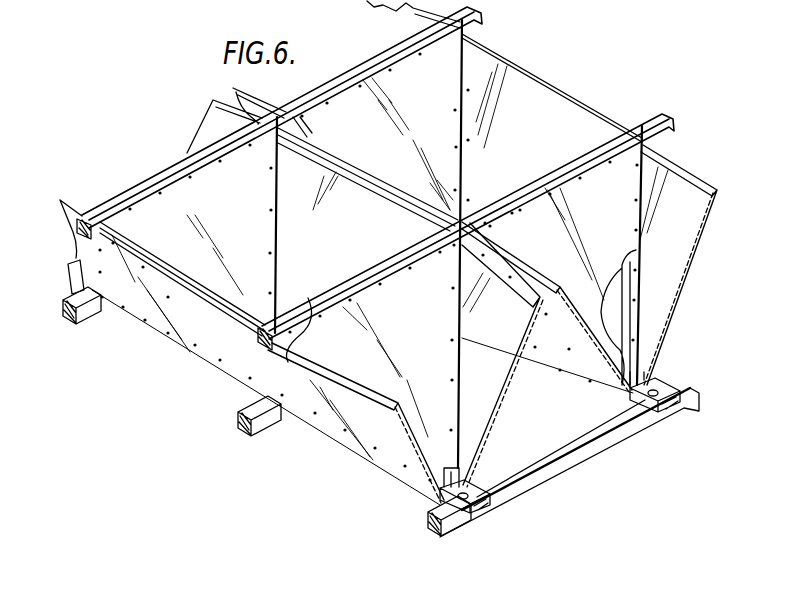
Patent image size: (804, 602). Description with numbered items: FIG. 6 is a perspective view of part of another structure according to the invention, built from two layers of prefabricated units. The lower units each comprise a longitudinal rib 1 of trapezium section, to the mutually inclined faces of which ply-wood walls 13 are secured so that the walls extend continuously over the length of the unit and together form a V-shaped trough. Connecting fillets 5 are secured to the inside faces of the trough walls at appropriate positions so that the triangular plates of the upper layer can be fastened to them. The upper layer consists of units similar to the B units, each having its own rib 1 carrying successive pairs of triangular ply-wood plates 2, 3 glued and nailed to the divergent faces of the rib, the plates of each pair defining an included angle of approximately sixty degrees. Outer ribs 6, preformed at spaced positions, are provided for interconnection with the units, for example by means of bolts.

The longitudinal rib 1 is at (98, 212).
The pair of triangular ply-wood plates 2 is at (601, 146).
The pair of triangular ply-wood plates 3 is at (148, 200).
The connecting fillet 5 is at (632, 279).
The outer rib 6 is at (90, 316).
The ply-wood wall 13 is at (653, 330).